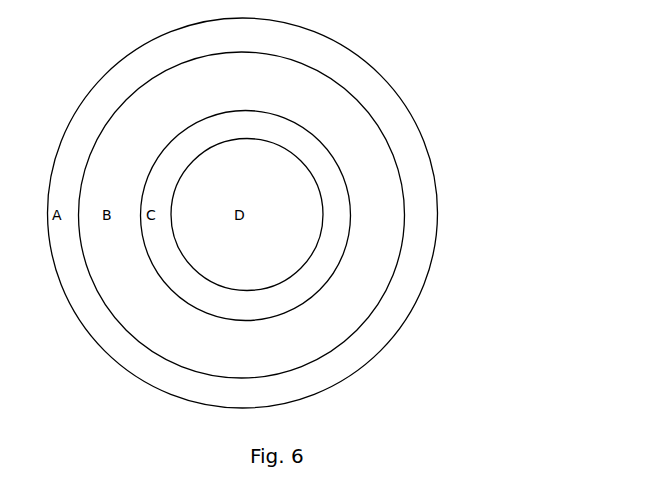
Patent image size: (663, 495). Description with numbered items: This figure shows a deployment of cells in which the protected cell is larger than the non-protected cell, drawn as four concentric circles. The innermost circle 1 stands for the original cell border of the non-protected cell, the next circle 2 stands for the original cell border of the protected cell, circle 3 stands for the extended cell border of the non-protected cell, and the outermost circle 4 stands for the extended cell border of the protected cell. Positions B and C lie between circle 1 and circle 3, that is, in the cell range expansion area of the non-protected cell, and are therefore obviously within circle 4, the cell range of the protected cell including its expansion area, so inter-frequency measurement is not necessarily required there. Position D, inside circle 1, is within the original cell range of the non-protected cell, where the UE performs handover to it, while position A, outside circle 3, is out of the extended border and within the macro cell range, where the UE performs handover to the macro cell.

The circle 1 is at (280, 145).
The circle 2 is at (328, 148).
The circle 3 is at (390, 148).
The circle 4 is at (432, 173).